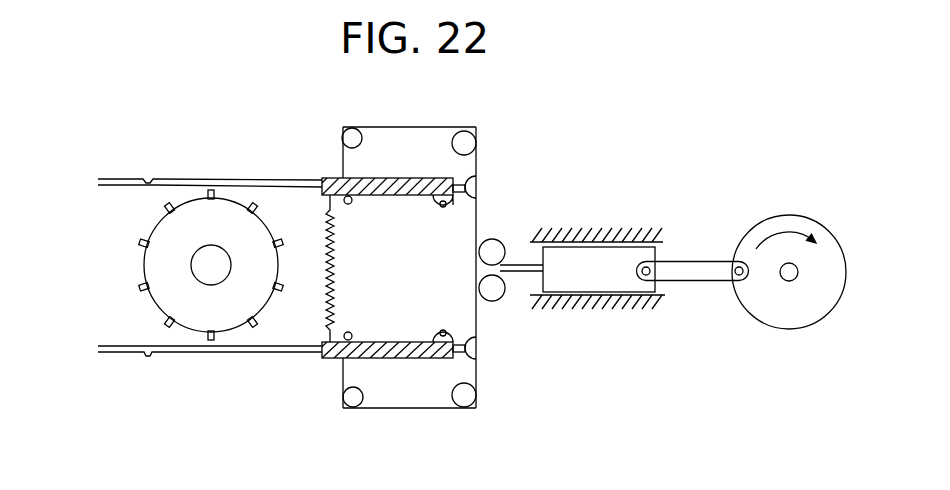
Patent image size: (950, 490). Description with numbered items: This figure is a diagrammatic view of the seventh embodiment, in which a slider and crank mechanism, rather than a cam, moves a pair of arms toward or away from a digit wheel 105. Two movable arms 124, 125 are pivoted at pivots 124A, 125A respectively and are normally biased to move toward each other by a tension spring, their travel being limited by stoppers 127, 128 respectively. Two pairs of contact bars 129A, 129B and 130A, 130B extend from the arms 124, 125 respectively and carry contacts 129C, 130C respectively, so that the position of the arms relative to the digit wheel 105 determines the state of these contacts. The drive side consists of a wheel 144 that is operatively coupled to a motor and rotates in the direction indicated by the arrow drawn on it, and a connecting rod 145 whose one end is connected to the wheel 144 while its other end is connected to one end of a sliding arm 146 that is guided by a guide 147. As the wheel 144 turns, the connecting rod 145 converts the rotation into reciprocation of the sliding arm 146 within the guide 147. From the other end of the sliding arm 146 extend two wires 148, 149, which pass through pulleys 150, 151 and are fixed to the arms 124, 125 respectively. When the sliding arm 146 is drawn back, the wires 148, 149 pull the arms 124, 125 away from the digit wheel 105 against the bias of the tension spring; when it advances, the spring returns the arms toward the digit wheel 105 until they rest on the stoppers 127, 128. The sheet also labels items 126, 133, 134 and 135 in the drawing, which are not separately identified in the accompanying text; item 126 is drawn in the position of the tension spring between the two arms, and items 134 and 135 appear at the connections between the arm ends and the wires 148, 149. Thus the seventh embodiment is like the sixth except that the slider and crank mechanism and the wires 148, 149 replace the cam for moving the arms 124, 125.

The digit wheel 105 is at (160, 255).
The movable arm 124 is at (410, 186).
The pivot 124A is at (443, 206).
The movable arm 125 is at (406, 358).
The pivot 125A is at (443, 329).
The tension spring 126 is at (335, 256).
The stopper 127 is at (349, 204).
The stopper 128 is at (349, 333).
The contact bar 129A is at (272, 179).
The contact bar 129B is at (115, 186).
The contact 129C is at (147, 178).
The contact bar 130A is at (264, 353).
The contact bar 130B is at (130, 346).
The contact 130C is at (148, 356).
The wheel tooth 133 is at (142, 288).
The yoke 134 is at (465, 176).
The block rod end 135 is at (465, 199).
The wheel 144 is at (792, 222).
The connecting rod 145 is at (701, 262).
The sliding arm 146 is at (601, 275).
The guide 147 is at (609, 241).
The wire 148 is at (477, 158).
The wire 149 is at (466, 349).
The pulleys 150 is at (498, 282).
The pulleys 151 is at (352, 128).